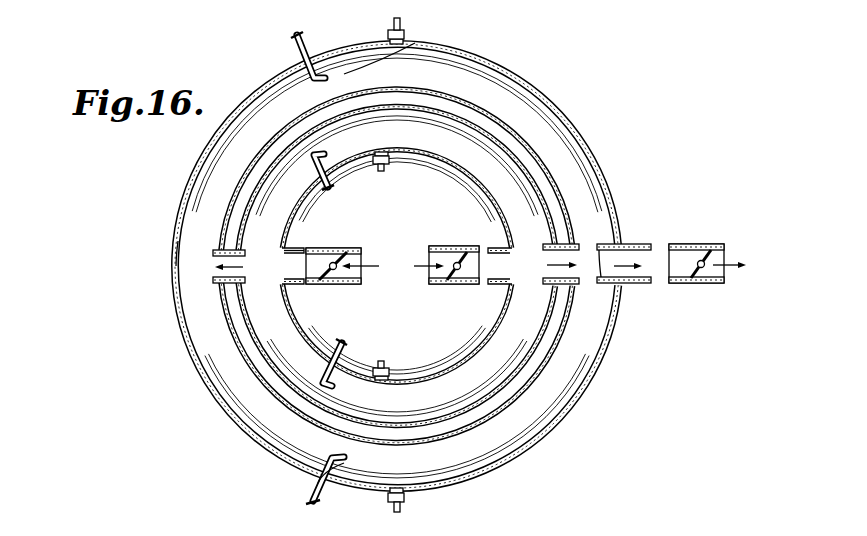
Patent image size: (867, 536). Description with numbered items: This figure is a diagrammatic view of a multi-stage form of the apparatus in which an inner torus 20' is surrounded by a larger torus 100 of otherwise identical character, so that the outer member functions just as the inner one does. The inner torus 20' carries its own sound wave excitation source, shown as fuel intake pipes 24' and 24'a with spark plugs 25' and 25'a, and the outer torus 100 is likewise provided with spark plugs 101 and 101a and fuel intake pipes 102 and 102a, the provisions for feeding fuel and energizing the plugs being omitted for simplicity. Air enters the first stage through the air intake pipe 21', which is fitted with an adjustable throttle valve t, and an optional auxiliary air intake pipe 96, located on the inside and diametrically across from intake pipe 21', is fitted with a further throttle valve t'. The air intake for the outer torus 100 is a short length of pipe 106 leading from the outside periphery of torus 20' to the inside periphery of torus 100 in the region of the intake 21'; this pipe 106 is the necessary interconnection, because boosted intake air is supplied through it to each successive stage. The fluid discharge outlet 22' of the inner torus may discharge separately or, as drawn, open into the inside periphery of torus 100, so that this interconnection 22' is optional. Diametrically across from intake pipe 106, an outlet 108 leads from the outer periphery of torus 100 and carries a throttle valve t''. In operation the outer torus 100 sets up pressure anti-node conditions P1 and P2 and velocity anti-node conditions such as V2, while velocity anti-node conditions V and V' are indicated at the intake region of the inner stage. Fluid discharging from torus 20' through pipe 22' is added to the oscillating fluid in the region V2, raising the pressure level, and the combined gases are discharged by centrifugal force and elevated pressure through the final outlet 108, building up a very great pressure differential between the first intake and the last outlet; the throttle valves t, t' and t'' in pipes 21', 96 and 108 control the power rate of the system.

The larger torus 100 is at (592, 157).
The inner torus 20' is at (424, 261).
The fluid discharge outlet 22' is at (436, 265).
The air intake pipe 21' is at (322, 230).
The fuel intake pipe 24' is at (349, 176).
The spark plug 25' is at (403, 172).
The fuel intake pipe 24'a is at (342, 349).
The spark plug 25'a is at (406, 360).
The auxiliary air intake pipe 96 is at (447, 283).
The spark plug 101 is at (388, 30).
The spark plug 101a is at (405, 505).
The fuel intake pipe 102 is at (291, 56).
The fuel intake pipe 102a is at (318, 503).
The air intake pipe 106 is at (224, 285).
The outlet 108 is at (632, 283).
The pressure anti-node condition P1 is at (414, 42).
The pressure anti-node condition P2 is at (317, 482).
The velocity anti-node condition V is at (332, 280).
The velocity anti-node condition V' is at (329, 252).
The velocity anti-node condition V2 is at (598, 250).
The adjustable throttle valve t is at (345, 254).
The adjustable throttle valve t' is at (447, 249).
The adjustable throttle valve t'' is at (707, 250).